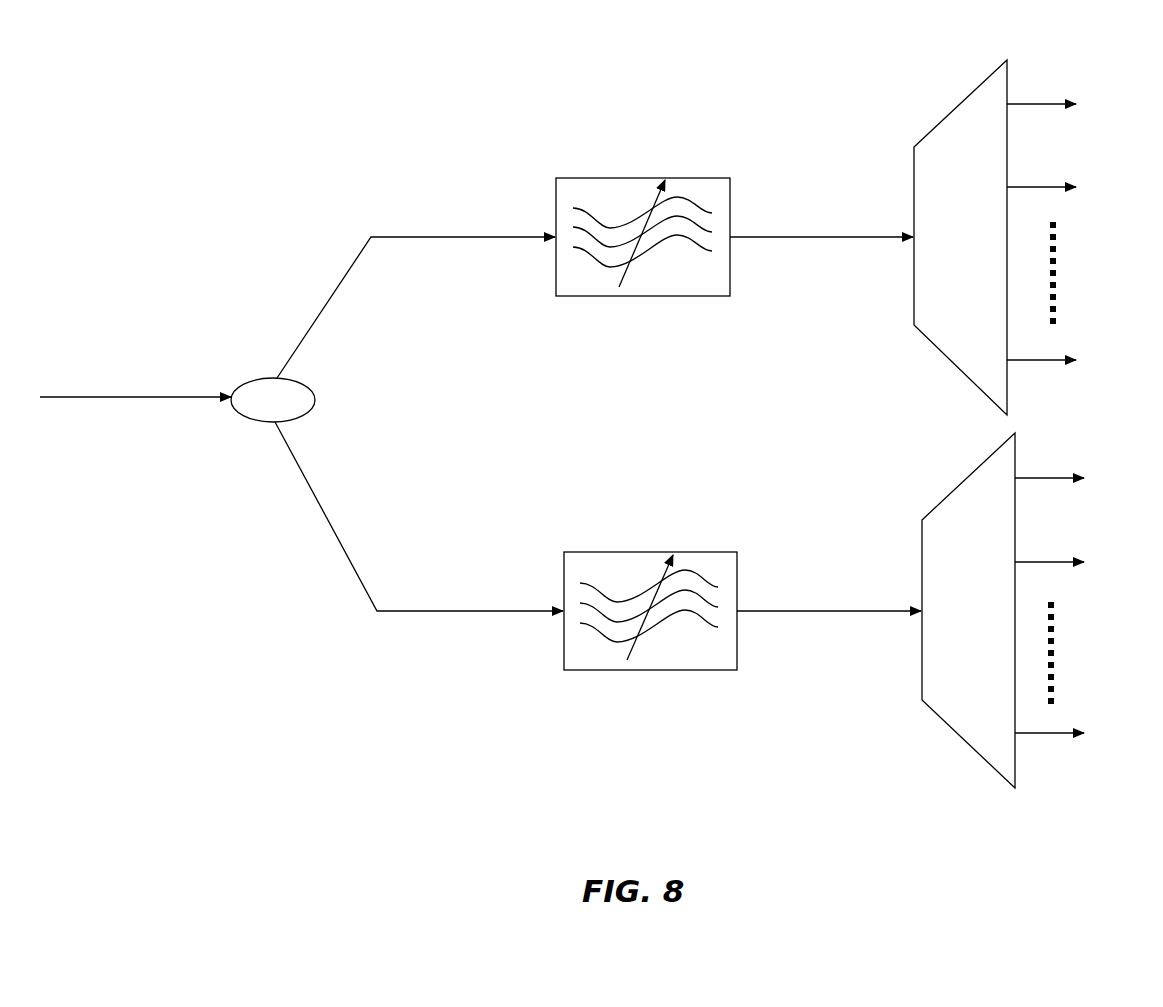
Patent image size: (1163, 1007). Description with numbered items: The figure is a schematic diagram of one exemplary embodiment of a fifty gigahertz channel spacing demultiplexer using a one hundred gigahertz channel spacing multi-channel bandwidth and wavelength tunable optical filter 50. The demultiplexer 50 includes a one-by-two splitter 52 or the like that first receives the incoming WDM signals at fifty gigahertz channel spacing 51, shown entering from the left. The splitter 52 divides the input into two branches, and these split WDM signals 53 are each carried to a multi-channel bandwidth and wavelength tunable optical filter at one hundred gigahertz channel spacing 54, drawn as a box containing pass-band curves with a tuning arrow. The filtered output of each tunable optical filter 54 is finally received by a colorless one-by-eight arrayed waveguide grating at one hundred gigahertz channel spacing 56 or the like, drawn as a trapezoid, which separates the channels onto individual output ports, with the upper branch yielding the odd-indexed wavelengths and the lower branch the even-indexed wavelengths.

The 50 GHz channel spacing DEMUX using 100 GHz channel spacing multi-channel BW and 50 is at (786, 88).
The incoming WDM signals at 50 GHz channel spacing 51 is at (153, 345).
The 1×2 splitter 52 is at (303, 378).
The split WDM signals 53 is at (465, 188).
The multi-channel BW and wavelength tunable optical filter at 100 GHz channel spacin 54 is at (633, 176).
The colorless 1×8 AWG at 100 GHz channel spacing 56 is at (1007, 92).